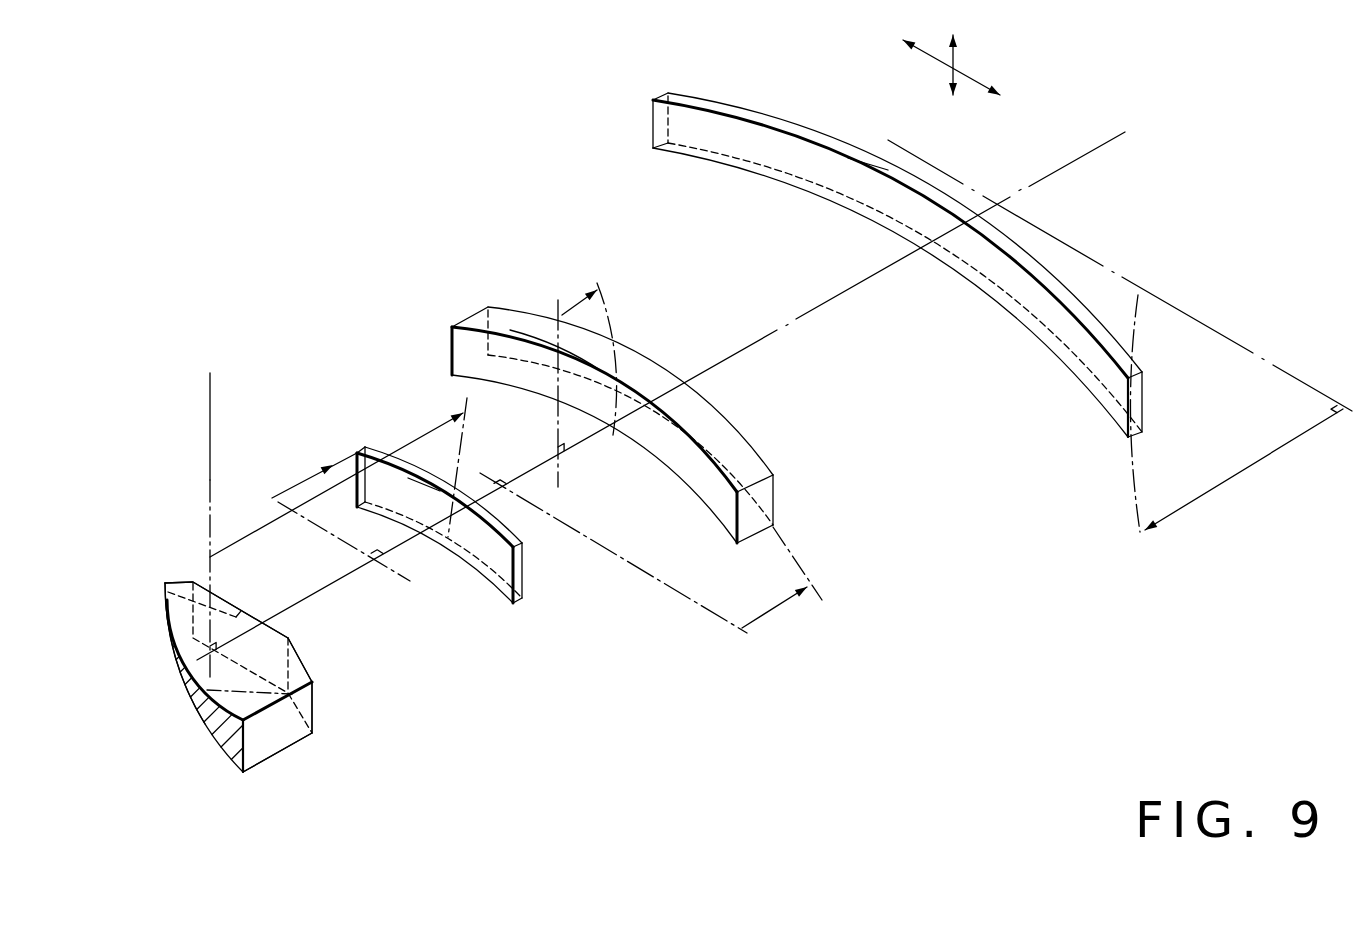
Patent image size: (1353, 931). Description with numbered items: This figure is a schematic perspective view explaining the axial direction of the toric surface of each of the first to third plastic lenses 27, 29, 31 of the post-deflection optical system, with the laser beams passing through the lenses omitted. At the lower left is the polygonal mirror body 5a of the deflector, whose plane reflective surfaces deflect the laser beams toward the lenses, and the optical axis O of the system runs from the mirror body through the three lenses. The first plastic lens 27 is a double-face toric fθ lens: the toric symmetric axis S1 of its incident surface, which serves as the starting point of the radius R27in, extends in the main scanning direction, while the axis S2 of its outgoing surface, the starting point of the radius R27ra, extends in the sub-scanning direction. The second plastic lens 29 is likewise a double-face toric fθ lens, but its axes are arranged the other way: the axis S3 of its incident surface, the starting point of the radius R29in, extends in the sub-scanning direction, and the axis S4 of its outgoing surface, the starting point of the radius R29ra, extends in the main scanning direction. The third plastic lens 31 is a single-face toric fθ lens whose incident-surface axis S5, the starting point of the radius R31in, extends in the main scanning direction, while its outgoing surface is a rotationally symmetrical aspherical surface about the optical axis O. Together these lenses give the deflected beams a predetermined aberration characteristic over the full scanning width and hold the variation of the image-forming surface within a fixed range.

The polygonal mirror body 5a is at (182, 586).
The first plastic lens 27 is at (524, 578).
The second plastic lens 29 is at (477, 322).
The third plastic lens 31 is at (897, 265).
The axis S1 is at (384, 563).
The axis S2 is at (208, 445).
The axis S3 is at (562, 470).
The axis S4 is at (653, 580).
The axis S5 is at (1160, 300).
The radius of the incident surface R27in is at (270, 497).
The radius of the outgoing surface R27ra is at (276, 504).
The radius of the incident surface R29in is at (563, 315).
The radius of the outgoing surface R29ra is at (783, 602).
The radius of the incident surface R31in is at (1200, 497).
The optical axis O is at (1112, 142).